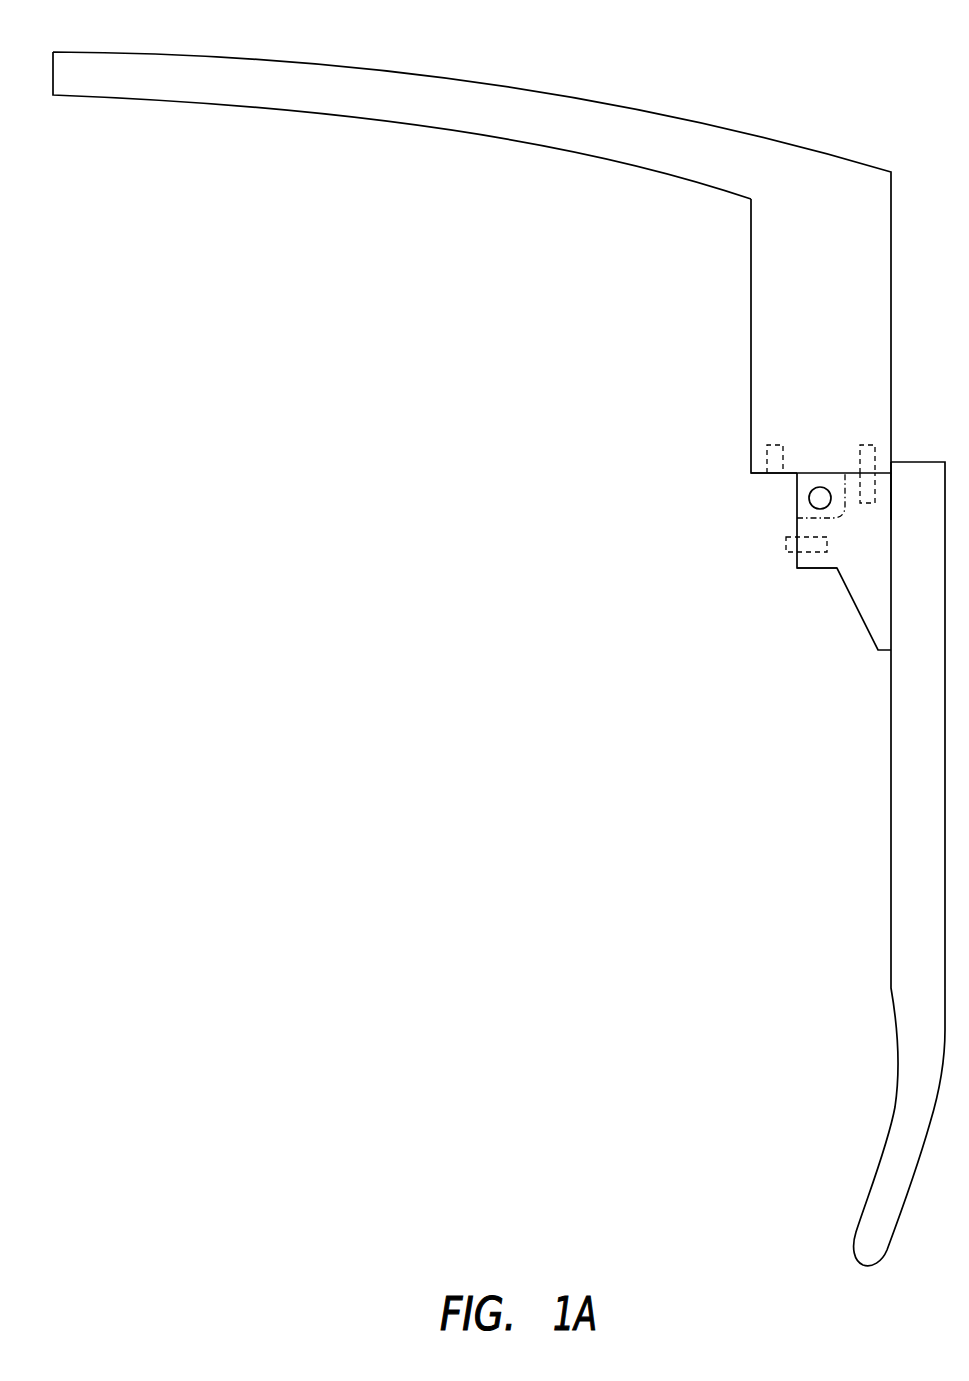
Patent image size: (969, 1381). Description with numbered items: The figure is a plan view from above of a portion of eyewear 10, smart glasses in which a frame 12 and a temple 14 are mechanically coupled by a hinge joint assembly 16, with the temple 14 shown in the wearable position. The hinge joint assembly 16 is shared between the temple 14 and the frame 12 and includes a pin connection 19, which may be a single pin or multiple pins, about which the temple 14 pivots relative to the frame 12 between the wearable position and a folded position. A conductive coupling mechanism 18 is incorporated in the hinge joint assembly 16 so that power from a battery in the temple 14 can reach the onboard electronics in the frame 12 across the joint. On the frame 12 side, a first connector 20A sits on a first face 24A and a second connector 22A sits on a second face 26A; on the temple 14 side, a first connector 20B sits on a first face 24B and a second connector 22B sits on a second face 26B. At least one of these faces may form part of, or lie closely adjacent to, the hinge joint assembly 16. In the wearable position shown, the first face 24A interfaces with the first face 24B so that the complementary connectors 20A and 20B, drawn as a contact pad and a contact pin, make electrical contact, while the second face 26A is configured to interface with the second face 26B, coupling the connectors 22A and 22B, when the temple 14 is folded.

The eyewear 10 is at (833, 48).
The frame 12 is at (487, 82).
The temple 14 is at (890, 765).
The hinge joint assembly 16 is at (747, 443).
The conductive coupling mechanism 18 is at (763, 567).
The pin connection 19 is at (822, 498).
The first connector 20A is at (870, 445).
The first connector 20B is at (868, 505).
The second connector 22A is at (767, 471).
The second connector 22B is at (788, 544).
The first face 24A is at (847, 472).
The first face 24B is at (880, 476).
The second face 26A is at (758, 477).
The second face 26B is at (796, 566).